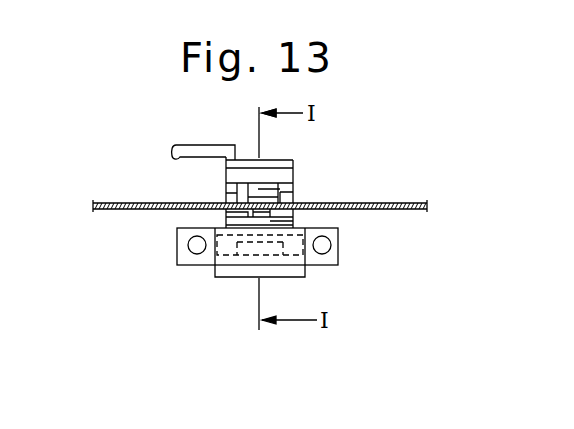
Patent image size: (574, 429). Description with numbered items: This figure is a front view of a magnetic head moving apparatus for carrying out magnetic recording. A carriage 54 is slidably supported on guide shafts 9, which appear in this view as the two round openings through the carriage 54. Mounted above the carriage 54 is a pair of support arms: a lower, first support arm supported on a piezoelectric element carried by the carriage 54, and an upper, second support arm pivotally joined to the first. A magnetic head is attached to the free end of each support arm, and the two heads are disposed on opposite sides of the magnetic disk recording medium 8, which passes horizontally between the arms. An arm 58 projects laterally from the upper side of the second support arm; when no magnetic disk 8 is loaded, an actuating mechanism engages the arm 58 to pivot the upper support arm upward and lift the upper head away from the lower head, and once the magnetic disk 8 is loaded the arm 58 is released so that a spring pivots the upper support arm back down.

The magnetic disk recording medium 8 is at (112, 204).
The arm 58 is at (172, 147).
The carriage 54 is at (338, 255).
The guide shafts 9 is at (198, 252).